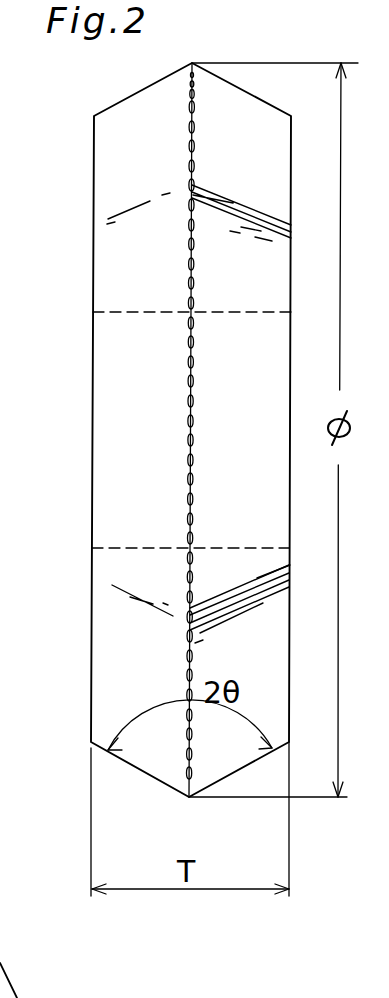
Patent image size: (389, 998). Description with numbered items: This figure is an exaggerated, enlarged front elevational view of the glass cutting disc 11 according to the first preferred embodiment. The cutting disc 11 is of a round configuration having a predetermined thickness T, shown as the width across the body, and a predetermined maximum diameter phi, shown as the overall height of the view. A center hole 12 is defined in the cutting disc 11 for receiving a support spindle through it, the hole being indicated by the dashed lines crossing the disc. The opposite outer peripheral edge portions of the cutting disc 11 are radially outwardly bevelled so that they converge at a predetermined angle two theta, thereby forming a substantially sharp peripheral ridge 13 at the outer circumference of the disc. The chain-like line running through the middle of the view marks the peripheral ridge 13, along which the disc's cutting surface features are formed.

The glass cutting disc 11 is at (91, 600).
The center hole 12 is at (122, 546).
The peripheral ridge 13 is at (183, 359).